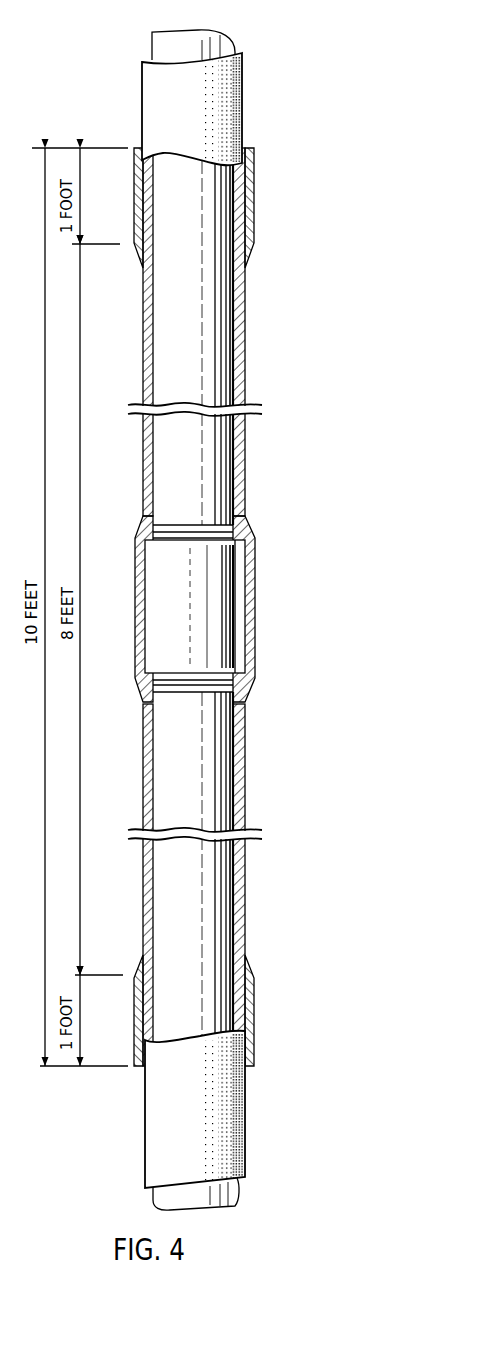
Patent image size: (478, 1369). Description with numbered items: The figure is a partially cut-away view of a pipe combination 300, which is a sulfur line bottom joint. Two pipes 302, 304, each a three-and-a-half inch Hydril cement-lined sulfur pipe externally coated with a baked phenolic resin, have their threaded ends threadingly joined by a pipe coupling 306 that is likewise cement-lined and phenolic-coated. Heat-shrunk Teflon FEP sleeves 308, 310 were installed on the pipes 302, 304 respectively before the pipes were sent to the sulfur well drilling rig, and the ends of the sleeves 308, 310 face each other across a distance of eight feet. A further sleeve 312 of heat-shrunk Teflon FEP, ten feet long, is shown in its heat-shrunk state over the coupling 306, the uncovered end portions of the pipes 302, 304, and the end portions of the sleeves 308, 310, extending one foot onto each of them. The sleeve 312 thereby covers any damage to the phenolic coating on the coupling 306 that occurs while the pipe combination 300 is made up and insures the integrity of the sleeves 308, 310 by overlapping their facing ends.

The pipe combination 300 is at (265, 278).
The pipe 302 is at (208, 375).
The pipe 304 is at (172, 922).
The pipe coupling 306 is at (183, 617).
The heat-shrunk Teflon FEP sleeve 308 is at (158, 108).
The heat-shrunk Teflon FEP sleeve 310 is at (162, 1121).
The sleeve 312 is at (146, 370).